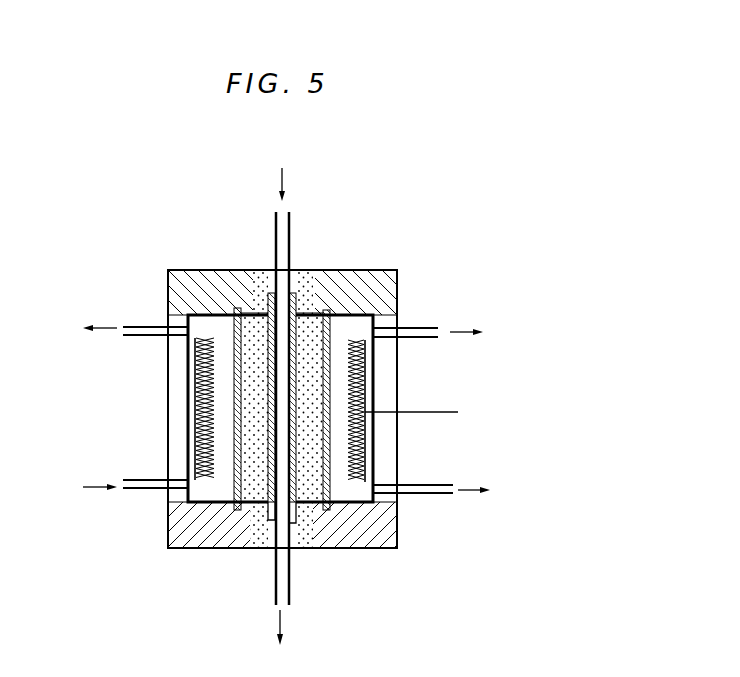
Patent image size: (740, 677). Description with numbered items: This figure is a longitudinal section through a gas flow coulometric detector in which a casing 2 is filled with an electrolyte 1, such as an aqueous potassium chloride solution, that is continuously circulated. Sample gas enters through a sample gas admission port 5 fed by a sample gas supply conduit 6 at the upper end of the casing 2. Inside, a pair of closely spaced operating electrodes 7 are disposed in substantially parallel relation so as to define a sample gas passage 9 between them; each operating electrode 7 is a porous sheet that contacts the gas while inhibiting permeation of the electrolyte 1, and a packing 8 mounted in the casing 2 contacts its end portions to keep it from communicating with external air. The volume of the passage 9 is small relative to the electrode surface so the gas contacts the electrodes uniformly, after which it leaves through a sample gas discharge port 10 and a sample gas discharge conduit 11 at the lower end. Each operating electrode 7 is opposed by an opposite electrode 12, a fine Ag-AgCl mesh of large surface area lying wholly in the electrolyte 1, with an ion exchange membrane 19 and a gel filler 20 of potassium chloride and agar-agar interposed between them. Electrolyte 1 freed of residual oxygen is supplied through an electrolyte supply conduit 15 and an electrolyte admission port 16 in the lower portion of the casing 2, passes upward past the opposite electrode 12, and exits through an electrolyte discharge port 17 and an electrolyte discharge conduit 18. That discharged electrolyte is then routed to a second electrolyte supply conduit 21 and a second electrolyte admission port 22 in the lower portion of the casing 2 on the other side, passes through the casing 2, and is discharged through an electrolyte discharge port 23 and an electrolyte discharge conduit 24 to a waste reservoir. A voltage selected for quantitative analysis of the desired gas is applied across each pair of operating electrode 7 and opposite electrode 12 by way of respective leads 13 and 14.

The electrolyte 1 is at (336, 333).
The casing 2 is at (392, 268).
The sample gas admission port 5 is at (362, 272).
The sample gas supply conduit 6 is at (285, 210).
The operating electrode 7 is at (270, 294).
The packing 8 is at (323, 308).
The sample gas passage 9 is at (283, 380).
The sample gas discharge port 10 is at (280, 520).
The sample gas discharge conduit 11 is at (283, 577).
The opposite electrode 12 is at (363, 440).
The lead 13 is at (291, 292).
The lead 14 is at (210, 407).
The electrolyte supply conduit 15 is at (124, 494).
The electrolyte admission port 16 is at (168, 506).
The electrolyte discharge port 17 is at (168, 314).
The electrolyte discharge conduit 18 is at (124, 328).
The ion exchange membrane 19 is at (237, 308).
The filler 20 is at (237, 505).
The electrolyte supply conduit 21 is at (452, 495).
The electrolyte admission port 22 is at (398, 516).
The electrolyte discharge port 23 is at (375, 322).
The electrolyte discharge conduit 24 is at (438, 337).